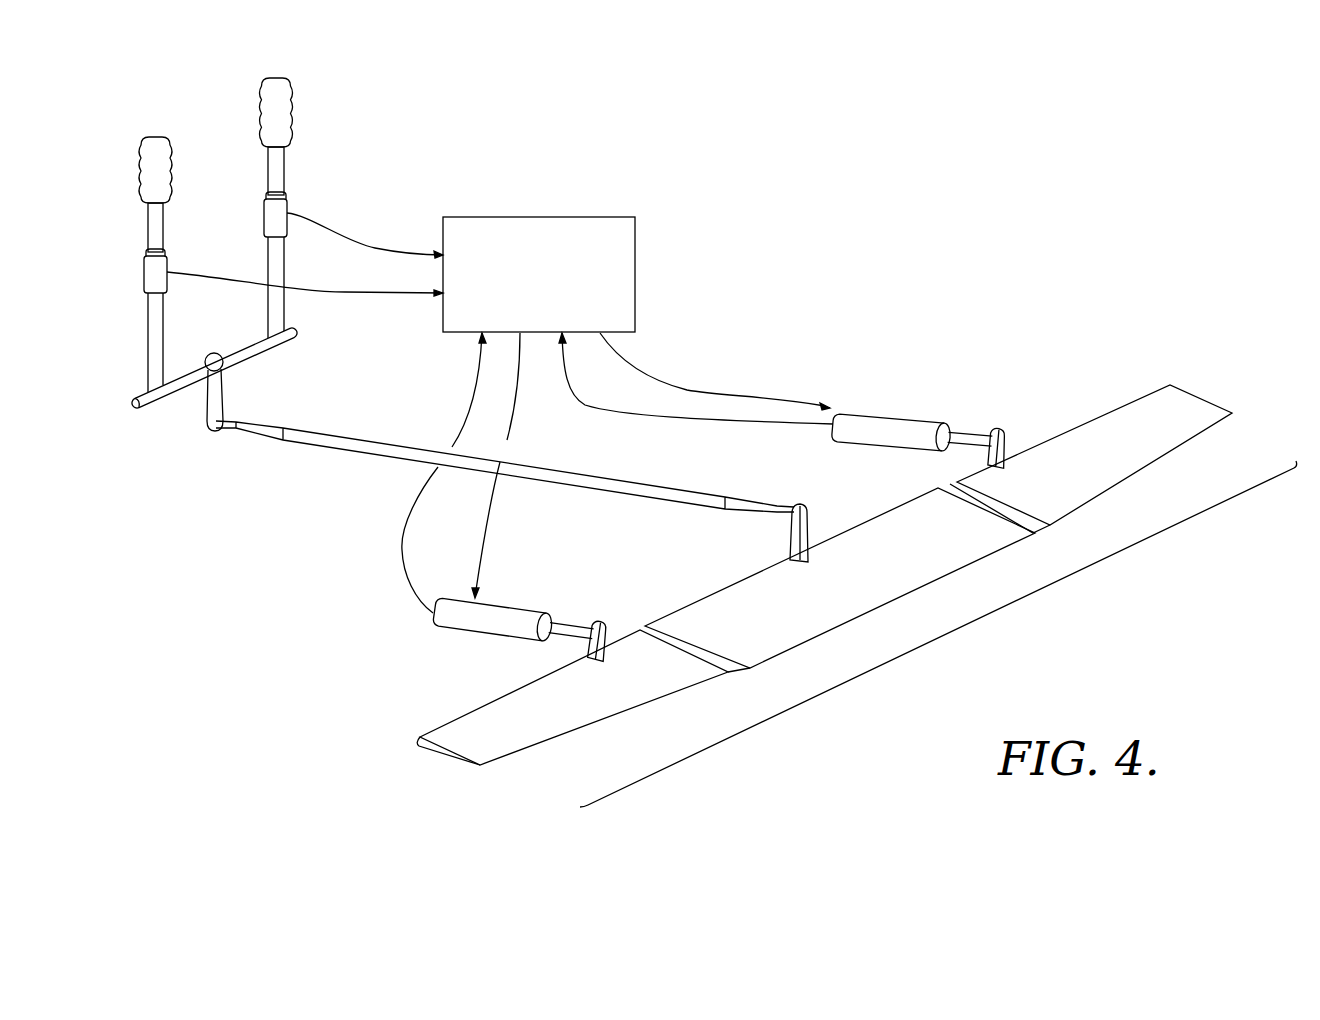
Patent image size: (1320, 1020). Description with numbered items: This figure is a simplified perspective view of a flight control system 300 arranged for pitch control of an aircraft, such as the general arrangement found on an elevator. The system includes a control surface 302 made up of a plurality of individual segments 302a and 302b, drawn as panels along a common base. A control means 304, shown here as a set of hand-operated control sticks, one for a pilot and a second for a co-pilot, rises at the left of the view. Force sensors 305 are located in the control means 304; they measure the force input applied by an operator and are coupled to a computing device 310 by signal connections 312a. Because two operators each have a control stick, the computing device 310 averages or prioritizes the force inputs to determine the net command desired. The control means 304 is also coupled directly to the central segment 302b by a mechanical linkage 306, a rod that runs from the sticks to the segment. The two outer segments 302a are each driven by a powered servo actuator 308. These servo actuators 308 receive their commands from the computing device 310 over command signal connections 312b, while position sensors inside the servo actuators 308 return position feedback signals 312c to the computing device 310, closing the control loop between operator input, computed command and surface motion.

The flight control system 300 is at (762, 177).
The control surface 302 is at (970, 626).
The segments 302a is at (626, 702).
The segment 302b is at (894, 574).
The control means 304 is at (168, 171).
The force sensors 305 is at (268, 218).
The mechanical linkage 306 is at (327, 442).
The powered servo actuators 308 is at (485, 625).
The computing device 310 is at (555, 285).
The signal connections 312a is at (376, 247).
The command signal connections 312b is at (481, 535).
The position feedback signals 312c is at (404, 527).